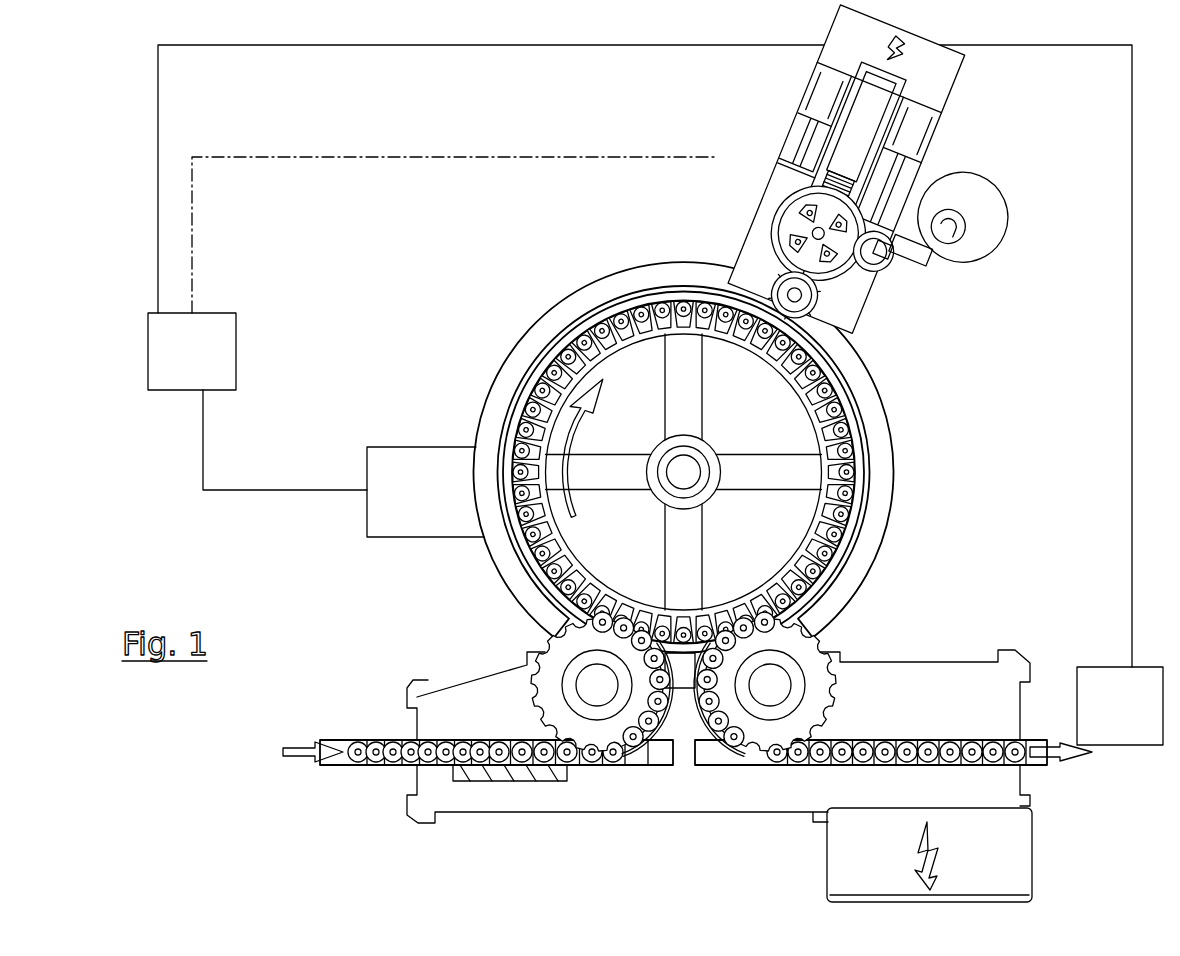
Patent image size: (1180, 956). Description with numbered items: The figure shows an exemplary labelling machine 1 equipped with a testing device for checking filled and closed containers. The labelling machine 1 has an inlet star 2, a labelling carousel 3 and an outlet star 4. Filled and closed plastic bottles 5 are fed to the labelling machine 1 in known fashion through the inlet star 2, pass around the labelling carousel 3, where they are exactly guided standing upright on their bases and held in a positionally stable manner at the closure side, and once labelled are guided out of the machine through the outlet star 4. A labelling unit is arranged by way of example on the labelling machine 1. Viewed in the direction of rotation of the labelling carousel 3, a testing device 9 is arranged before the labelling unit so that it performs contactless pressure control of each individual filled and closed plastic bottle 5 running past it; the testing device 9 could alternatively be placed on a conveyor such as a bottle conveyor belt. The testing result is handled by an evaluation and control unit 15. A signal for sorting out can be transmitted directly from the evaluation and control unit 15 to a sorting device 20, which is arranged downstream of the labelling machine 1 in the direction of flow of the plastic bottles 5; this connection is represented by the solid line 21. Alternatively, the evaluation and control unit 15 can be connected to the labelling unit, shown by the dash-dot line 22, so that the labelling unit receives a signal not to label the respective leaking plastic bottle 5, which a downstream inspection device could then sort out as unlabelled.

The labelling machine 1 is at (916, 372).
The inlet star 2 is at (513, 667).
The labelling carousel 3 is at (880, 533).
The outlet star 4 is at (845, 653).
The plastic bottles 5 is at (642, 500).
The testing device 9 is at (425, 492).
The evaluation and control unit 15 is at (192, 351).
The sorting device 20 is at (1120, 706).
The solid line 21 is at (645, 345).
The dash-dot line 22 is at (453, 223).